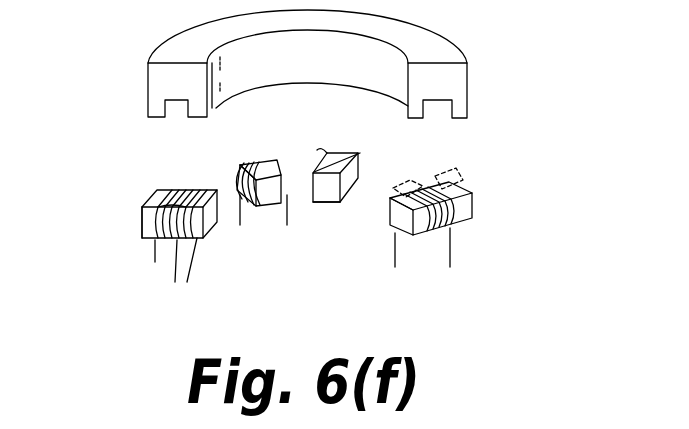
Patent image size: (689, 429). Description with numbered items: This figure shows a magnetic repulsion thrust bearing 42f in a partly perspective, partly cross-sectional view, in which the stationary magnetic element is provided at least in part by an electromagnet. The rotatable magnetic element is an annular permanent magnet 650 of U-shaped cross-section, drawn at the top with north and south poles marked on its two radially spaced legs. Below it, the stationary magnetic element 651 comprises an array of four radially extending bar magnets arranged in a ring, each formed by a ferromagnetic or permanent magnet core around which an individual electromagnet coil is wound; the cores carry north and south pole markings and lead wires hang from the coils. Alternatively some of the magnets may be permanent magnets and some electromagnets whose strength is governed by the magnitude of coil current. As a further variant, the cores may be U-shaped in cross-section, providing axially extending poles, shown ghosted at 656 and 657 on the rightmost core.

The permanent magnet 650 is at (158, 40).
The magnetic repulsion thrust bearing 42f is at (167, 168).
The stationary magnetic element 651 is at (330, 218).
The axially extending pole 656 is at (458, 172).
The axially extending pole 657 is at (407, 177).